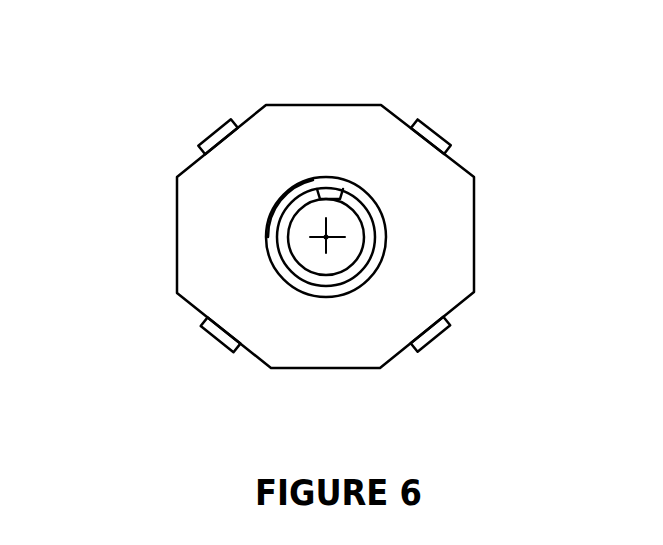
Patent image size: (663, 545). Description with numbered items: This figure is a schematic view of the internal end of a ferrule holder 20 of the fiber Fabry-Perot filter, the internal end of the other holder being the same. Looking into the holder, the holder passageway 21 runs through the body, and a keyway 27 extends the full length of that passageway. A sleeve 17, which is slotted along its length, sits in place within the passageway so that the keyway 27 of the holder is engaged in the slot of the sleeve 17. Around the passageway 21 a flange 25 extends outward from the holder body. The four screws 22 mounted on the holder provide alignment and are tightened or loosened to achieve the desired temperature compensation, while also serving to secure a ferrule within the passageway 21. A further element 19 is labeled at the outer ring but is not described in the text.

The ferrule holder 20 is at (587, 130).
The screws 22 is at (215, 127).
The outer ring 19 is at (313, 181).
The holder passageway 21 is at (283, 262).
The sleeve 17 is at (387, 233).
The keyway 27 is at (330, 188).
The flange 25 is at (269, 237).